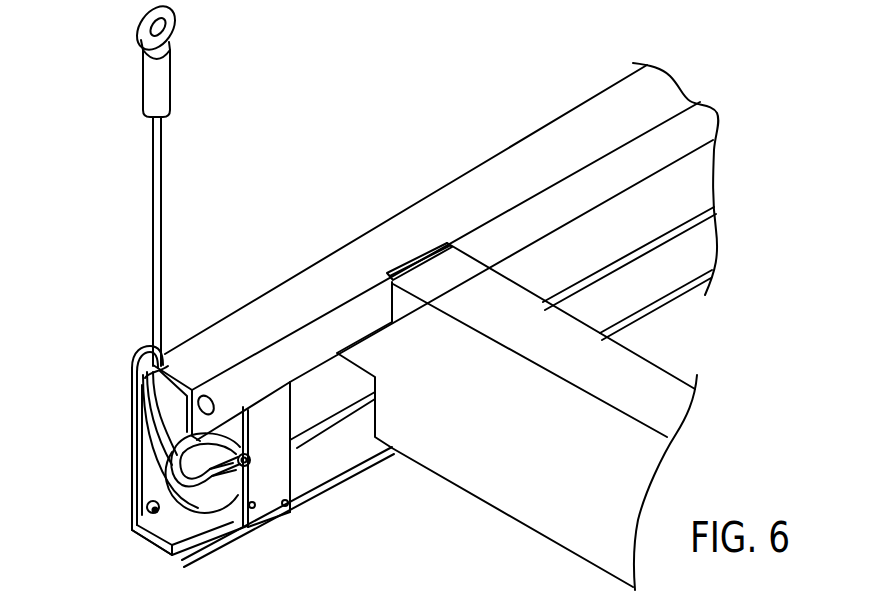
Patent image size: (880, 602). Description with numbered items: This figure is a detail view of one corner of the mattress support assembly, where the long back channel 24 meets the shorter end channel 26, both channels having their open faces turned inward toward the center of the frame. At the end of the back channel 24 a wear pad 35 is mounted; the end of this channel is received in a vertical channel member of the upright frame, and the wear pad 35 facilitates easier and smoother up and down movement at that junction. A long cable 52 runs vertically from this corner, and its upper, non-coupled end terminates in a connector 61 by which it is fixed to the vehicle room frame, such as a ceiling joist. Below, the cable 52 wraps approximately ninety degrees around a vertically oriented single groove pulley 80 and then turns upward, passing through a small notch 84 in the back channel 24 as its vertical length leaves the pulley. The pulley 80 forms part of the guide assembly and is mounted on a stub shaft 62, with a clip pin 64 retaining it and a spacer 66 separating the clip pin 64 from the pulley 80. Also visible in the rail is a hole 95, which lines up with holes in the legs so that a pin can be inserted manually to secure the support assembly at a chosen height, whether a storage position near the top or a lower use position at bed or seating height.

The back channel 24 is at (347, 240).
The end channel 26 is at (496, 500).
The wear pad 35 is at (130, 366).
The cable 52 is at (153, 243).
The connector 61 is at (170, 80).
The stub shaft 62 is at (244, 457).
The clip pin 64 is at (237, 532).
The spacer 66 is at (223, 422).
The vertically oriented single groove pulley 80 is at (195, 510).
The notch 84 is at (166, 355).
The hole 95 is at (132, 528).